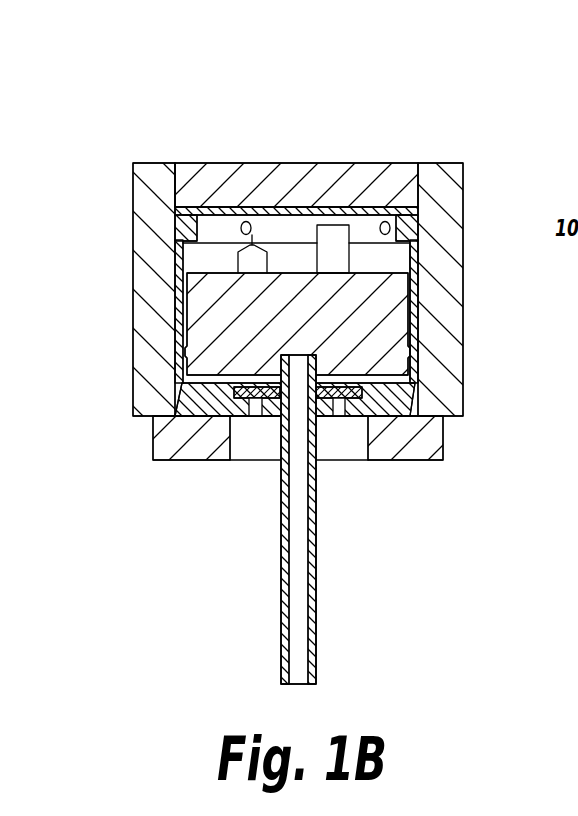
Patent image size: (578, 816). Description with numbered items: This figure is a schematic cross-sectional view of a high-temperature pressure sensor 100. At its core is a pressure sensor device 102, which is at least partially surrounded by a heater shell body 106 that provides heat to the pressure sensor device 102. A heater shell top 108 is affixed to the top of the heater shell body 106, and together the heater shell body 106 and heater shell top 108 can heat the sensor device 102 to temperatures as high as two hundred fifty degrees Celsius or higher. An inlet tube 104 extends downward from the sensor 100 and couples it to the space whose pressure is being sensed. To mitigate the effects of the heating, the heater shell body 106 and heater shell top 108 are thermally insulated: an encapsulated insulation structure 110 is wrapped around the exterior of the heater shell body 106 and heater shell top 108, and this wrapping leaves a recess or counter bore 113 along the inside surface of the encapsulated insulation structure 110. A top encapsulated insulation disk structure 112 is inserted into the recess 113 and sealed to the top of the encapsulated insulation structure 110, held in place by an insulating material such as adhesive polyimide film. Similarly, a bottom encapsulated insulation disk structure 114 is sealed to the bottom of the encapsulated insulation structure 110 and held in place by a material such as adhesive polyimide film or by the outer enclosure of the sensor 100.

The high-temperature pressure sensor 100 is at (315, 108).
The pressure sensor device 102 is at (382, 358).
The inlet tube 104 is at (299, 548).
The heater shell body 106 is at (413, 268).
The heater shell top 108 is at (178, 208).
The encapsulated insulation structure 110 is at (155, 337).
The top encapsulated insulation disk structure 112 is at (342, 170).
The recess or counter bore 113 is at (178, 178).
The bottom encapsulated insulation disk structure 114 is at (214, 446).